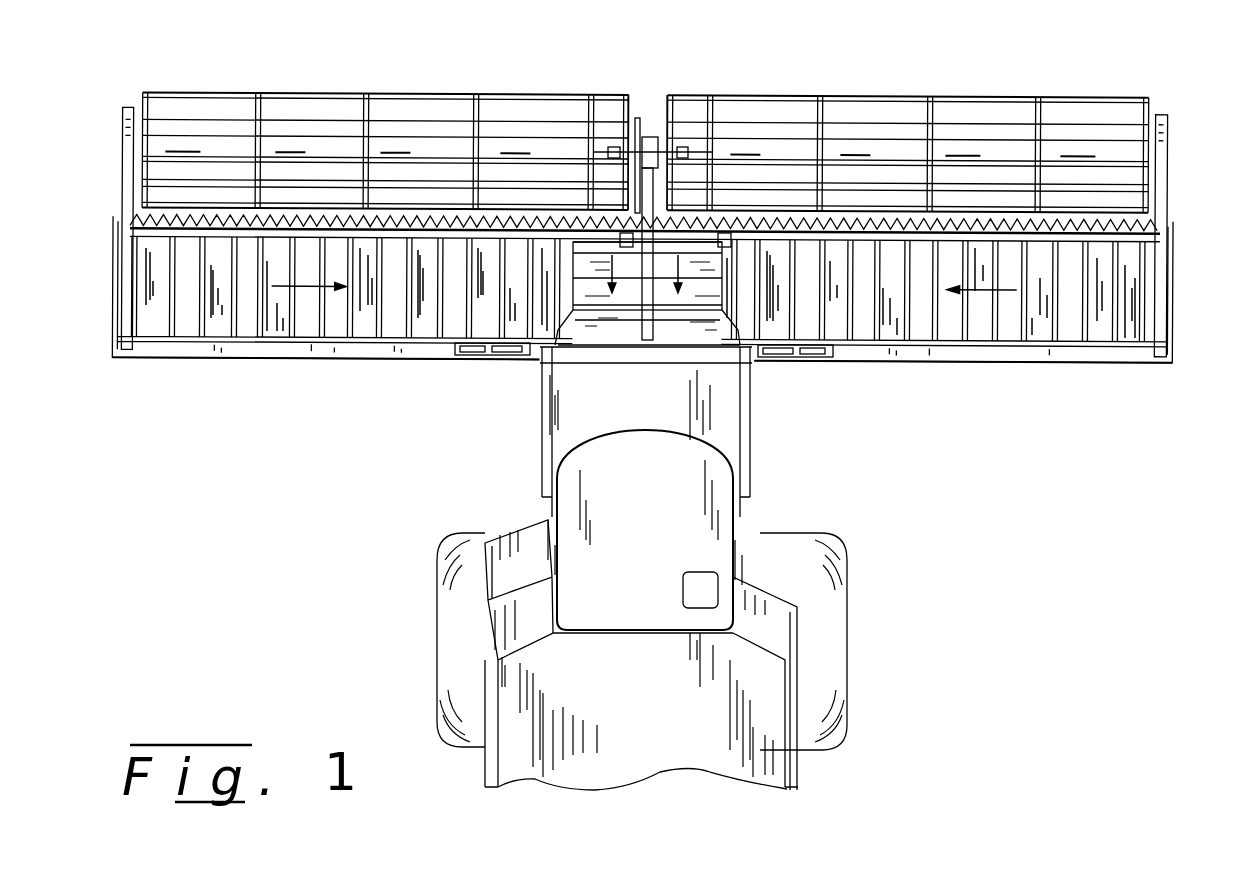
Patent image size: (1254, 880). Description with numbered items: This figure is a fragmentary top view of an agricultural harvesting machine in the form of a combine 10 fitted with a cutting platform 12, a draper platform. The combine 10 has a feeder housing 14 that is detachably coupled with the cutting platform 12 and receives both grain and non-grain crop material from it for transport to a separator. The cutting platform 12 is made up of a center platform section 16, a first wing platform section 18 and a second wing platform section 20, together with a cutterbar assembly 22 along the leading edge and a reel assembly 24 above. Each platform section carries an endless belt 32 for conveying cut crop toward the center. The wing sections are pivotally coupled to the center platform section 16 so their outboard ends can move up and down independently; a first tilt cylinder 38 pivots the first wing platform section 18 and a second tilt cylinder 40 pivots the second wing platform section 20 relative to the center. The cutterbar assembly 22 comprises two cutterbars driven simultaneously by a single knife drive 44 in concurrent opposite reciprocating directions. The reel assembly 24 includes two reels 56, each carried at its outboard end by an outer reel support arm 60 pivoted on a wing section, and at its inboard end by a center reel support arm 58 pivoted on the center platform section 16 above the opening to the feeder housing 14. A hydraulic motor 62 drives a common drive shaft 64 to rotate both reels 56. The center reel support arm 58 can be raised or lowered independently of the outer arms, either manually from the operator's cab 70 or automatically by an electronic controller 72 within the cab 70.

The combine 10 is at (965, 574).
The cutting platform 12 is at (1055, 68).
The feeder housing 14 is at (750, 425).
The center platform section 16 is at (560, 264).
The first wing platform section 18 is at (265, 370).
The second wing platform section 20 is at (1023, 375).
The cutterbar assembly 22 is at (1112, 225).
The reel assembly 24 is at (678, 88).
The endless belt 32 is at (193, 320).
The first tilt cylinder 38 is at (512, 363).
The second tilt cylinder 40 is at (780, 363).
The knife drive 44 is at (620, 225).
The reel 56 is at (402, 93).
The center reel support arm 58 is at (645, 290).
The outer reel support arm 60 is at (122, 163).
The hydraulic motor 62 is at (690, 152).
The common drive shaft 64 is at (660, 140).
The operator's cab 70 is at (668, 537).
The electronic controller 72 is at (683, 590).